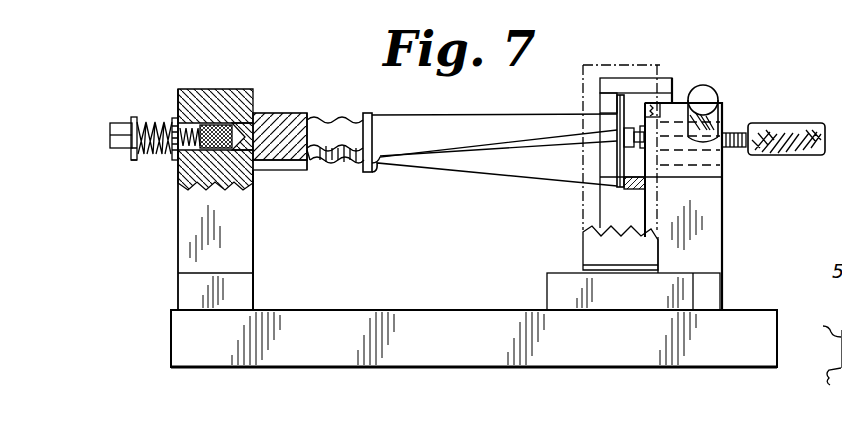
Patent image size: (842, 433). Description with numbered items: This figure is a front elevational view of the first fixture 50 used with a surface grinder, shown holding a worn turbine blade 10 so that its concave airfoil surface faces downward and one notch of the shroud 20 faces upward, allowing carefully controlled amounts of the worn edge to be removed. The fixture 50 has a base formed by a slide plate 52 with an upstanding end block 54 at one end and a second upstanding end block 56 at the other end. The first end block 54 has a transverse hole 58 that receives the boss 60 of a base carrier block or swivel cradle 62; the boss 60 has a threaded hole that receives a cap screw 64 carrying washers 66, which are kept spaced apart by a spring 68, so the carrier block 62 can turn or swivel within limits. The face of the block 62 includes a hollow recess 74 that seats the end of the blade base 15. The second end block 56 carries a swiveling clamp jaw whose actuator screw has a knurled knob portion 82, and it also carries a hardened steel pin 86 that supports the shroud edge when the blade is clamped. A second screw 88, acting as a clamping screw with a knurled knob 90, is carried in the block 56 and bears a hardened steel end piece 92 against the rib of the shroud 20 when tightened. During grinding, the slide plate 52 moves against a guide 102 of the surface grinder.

The tapered tubular workpiece 10 is at (467, 180).
The base 15 is at (333, 143).
The shroud 20 is at (615, 150).
The fixture 50 is at (800, 84).
The slide plate 52 is at (753, 320).
The upstanding end block 54 is at (243, 234).
The second upstanding end block 56 is at (712, 246).
The transverse hole 58 is at (190, 127).
The boss 60 is at (221, 125).
The base carrier block or swivel cradle 62 is at (294, 103).
The cap screw 64 is at (110, 136).
The washers 66 is at (132, 122).
The spring 68 is at (141, 157).
The hollow recess 74 is at (309, 125).
The knurled knob portion 82 is at (708, 92).
The hardened steel pin 86 is at (620, 237).
The second screw 88 is at (739, 132).
The knurled knob 90 is at (800, 130).
The hardened steel end piece 92 is at (630, 130).
The guide 102 is at (819, 342).